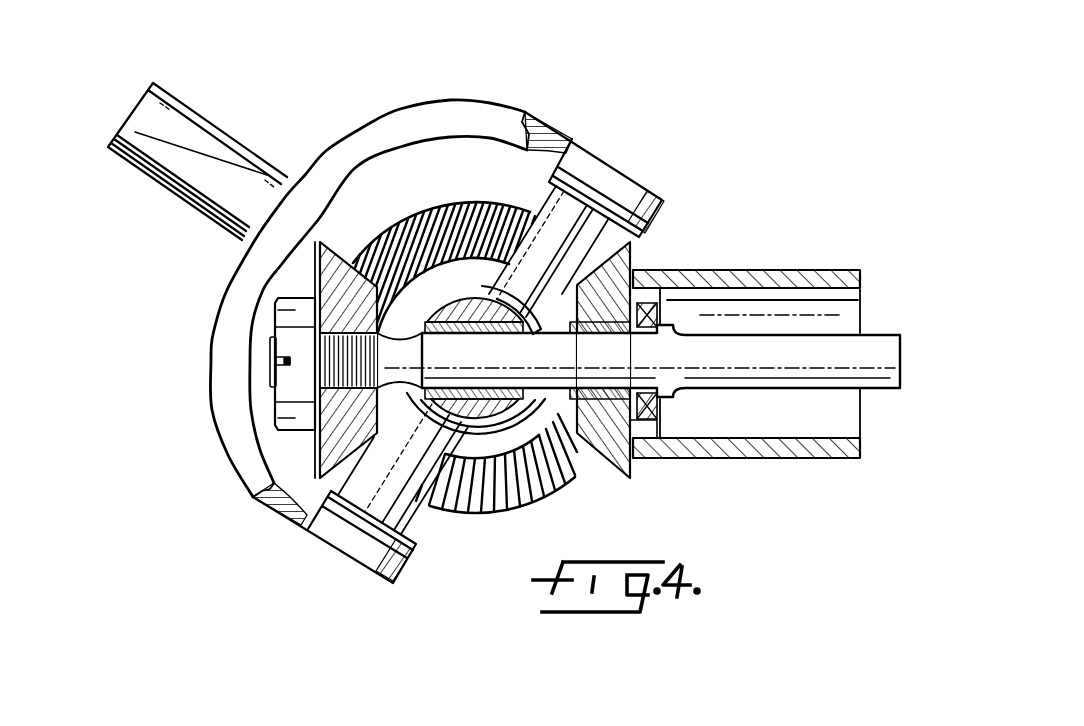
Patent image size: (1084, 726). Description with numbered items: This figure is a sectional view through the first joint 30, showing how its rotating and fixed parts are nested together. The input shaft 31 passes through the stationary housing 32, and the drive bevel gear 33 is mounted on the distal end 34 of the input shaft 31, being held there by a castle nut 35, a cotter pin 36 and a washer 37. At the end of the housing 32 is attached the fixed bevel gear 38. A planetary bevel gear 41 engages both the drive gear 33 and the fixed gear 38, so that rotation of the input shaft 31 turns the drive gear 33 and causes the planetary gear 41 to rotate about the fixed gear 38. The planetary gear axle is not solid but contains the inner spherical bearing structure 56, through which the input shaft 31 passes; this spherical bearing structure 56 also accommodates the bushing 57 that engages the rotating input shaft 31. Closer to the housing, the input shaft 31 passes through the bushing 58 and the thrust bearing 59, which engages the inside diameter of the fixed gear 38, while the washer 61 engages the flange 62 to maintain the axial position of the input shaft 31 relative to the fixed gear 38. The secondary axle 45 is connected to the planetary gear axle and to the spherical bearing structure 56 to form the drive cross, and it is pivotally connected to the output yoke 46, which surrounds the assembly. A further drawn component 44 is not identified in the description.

The first joint 30 is at (680, 181).
The input shaft 31 is at (883, 338).
The stationary housing 32 is at (800, 271).
The drive bevel gear 33 is at (333, 244).
The distal end 34 is at (270, 374).
The castle nut 35 is at (293, 294).
The cotter pin 36 is at (278, 362).
The washer 37 is at (285, 476).
The fixed bevel gear 38 is at (605, 471).
The planetary bevel gear 41 is at (494, 512).
The pinion shaft 44 is at (200, 124).
The secondary axle 45 is at (553, 211).
The output yoke 46 is at (462, 98).
The spherical bearing structure 56 is at (488, 279).
The bushing 57 is at (450, 308).
The bushing 58 is at (565, 411).
The thrust bearing 59 is at (634, 429).
The washer 61 is at (652, 311).
The flange 62 is at (660, 389).